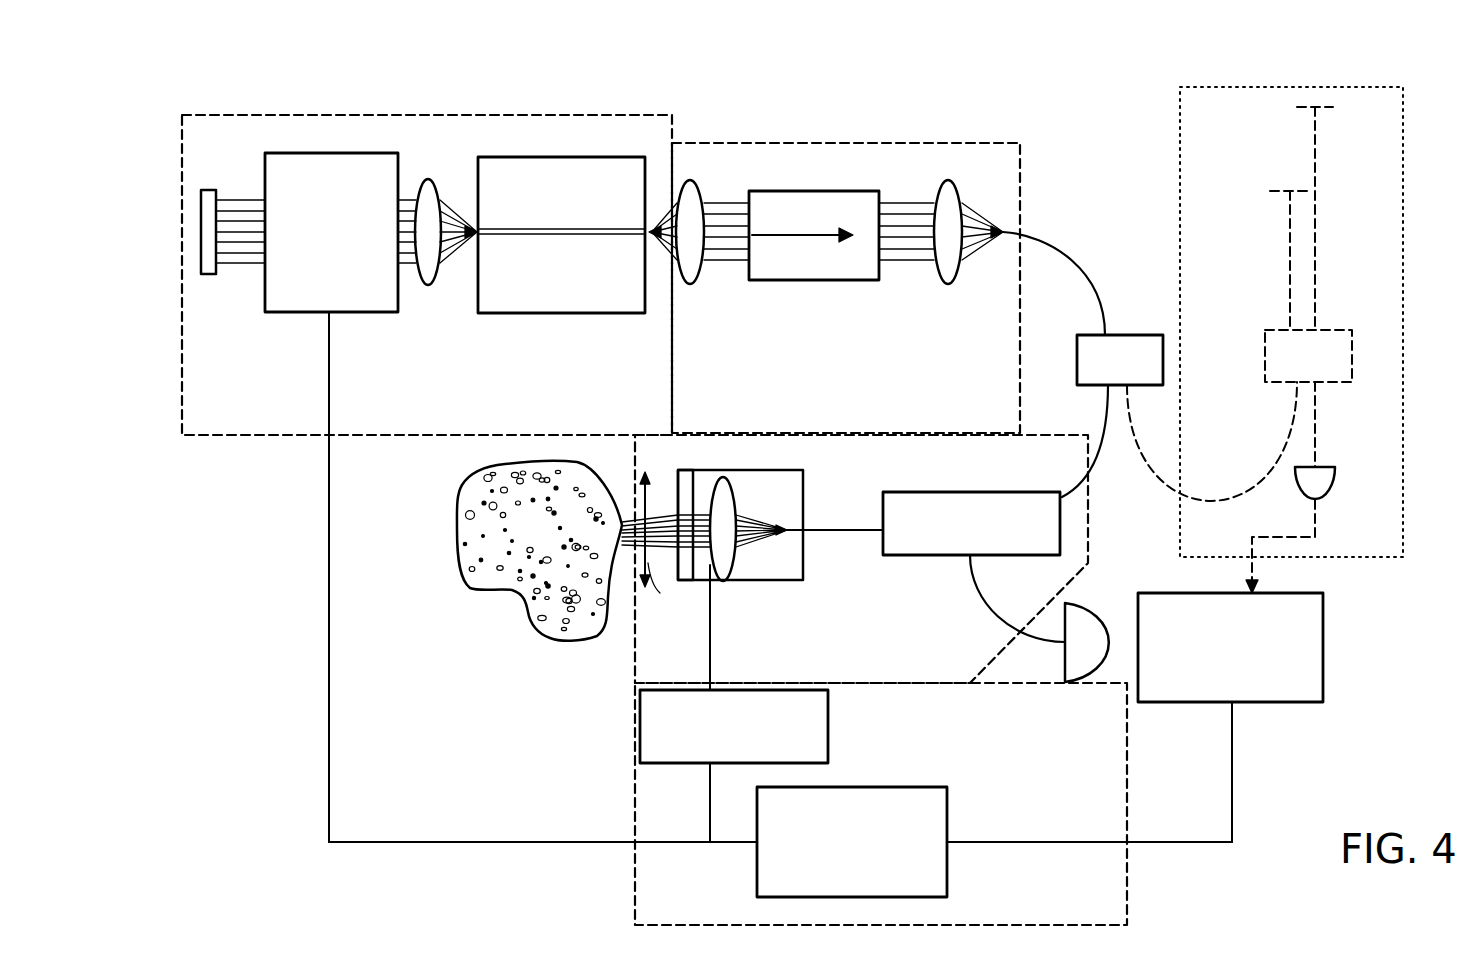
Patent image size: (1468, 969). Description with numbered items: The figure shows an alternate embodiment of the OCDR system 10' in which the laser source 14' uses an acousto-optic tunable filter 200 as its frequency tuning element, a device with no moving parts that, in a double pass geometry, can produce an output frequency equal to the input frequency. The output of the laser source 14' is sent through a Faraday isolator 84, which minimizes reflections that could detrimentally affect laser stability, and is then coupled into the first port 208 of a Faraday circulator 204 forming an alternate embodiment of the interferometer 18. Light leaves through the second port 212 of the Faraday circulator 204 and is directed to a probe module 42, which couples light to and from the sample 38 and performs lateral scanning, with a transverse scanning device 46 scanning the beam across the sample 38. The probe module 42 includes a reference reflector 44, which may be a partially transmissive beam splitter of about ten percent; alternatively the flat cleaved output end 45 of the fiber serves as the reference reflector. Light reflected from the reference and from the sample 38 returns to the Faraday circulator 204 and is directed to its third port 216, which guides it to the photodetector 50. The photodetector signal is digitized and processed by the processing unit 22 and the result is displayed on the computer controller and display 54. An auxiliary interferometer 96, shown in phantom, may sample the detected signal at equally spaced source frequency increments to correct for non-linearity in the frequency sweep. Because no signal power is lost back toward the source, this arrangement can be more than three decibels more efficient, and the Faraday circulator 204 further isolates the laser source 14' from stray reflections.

The OCDR system 10' is at (792, 481).
The laser source 14' is at (427, 478).
The acousto-optic tunable filter 200 is at (295, 312).
The Faraday isolator 84 is at (795, 191).
The auxiliary interferometer 96 is at (1359, 137).
The first port of the Faraday circulator 208 is at (1080, 480).
The interferometer 18 is at (856, 665).
The sample 38 is at (527, 620).
The reference reflector 44 is at (687, 582).
The probe module 42 is at (777, 582).
The flat cleaved output end of fiber 45 is at (788, 527).
The second port of the Faraday circulator 212 is at (842, 533).
The Faraday circulator 204 is at (920, 558).
The third port of the Faraday circulator 216 is at (987, 607).
The photodetector 50 is at (1062, 658).
The processing unit 22 is at (1272, 703).
The transverse scanning device 46 is at (830, 720).
The computer controller and display 54 is at (948, 869).